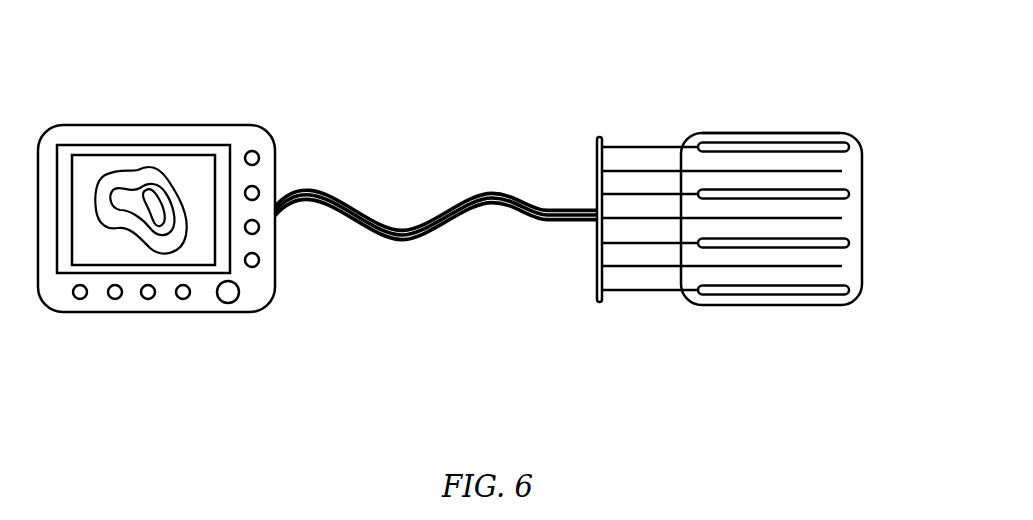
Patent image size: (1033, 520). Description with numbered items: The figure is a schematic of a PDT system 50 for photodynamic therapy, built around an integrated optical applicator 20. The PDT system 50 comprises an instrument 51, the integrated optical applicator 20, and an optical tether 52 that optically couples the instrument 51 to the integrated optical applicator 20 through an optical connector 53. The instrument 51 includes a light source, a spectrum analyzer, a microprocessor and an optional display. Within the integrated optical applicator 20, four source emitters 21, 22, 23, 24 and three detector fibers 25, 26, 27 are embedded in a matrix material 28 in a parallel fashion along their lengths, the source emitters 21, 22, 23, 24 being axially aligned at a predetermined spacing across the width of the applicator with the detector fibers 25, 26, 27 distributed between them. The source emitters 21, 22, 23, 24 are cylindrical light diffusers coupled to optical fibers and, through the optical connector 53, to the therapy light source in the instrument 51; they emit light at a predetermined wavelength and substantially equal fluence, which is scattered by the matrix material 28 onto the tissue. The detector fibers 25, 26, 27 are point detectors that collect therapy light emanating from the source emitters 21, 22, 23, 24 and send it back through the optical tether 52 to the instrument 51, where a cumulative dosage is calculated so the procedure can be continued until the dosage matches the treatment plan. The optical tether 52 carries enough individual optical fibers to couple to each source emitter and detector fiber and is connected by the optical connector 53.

The integrated optical applicator 20 is at (868, 100).
The source emitter 21 is at (833, 296).
The source emitter 22 is at (851, 243).
The source emitter 23 is at (851, 194).
The source emitter 24 is at (851, 147).
The detector fiber 25 is at (842, 266).
The detector fiber 26 is at (842, 218).
The detector fiber 27 is at (842, 171).
The matrix material 28 is at (803, 133).
The PDT system 50 is at (507, 98).
The instrument 51 is at (235, 313).
The optical tether 52 is at (380, 236).
The optical connector 53 is at (598, 273).